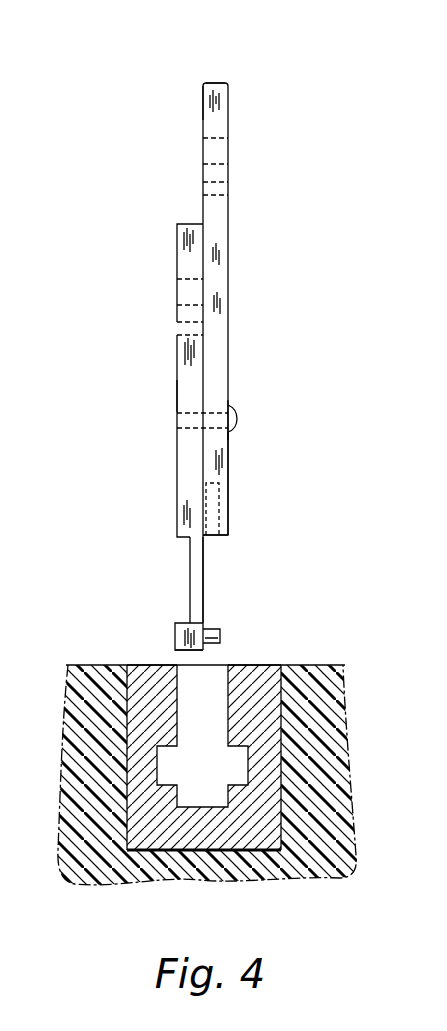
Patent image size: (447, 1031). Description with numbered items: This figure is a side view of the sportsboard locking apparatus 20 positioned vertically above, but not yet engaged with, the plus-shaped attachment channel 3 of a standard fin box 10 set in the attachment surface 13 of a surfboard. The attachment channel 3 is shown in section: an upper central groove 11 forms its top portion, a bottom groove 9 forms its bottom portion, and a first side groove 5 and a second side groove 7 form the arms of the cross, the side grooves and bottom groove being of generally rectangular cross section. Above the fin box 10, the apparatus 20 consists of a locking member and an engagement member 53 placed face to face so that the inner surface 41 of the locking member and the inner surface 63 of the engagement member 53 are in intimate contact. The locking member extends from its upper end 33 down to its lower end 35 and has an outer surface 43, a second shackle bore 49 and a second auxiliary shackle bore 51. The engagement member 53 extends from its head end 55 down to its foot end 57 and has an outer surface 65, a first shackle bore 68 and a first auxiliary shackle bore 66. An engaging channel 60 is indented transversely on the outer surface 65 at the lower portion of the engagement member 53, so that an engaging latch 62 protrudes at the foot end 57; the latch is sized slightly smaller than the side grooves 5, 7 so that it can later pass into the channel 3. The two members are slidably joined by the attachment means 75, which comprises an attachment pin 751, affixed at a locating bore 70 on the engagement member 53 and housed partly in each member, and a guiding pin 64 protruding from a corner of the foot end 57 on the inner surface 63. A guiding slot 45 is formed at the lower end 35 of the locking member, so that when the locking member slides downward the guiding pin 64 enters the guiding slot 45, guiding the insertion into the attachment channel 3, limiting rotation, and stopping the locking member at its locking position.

The sportsboard locking apparatus 20 is at (199, 62).
The upper end 33 is at (219, 84).
The inner surface 41 is at (202, 103).
The second shackle bore 49 is at (228, 141).
The second auxiliary shackle bore 51 is at (230, 183).
The head end 55 is at (180, 224).
The first shackle bore 68 is at (177, 290).
The first auxiliary shackle bore 66 is at (177, 327).
The outer surface 65 is at (177, 370).
The engagement member 53 is at (185, 400).
The locating bore 70 is at (177, 421).
The attachment pin 751 is at (238, 410).
The attachment means 75 is at (280, 425).
The outer surface 43 is at (232, 432).
The guiding slot 45 is at (212, 521).
The lower end 35 is at (225, 537).
The engaging channel 60 is at (188, 573).
The inner surface 63 is at (204, 598).
The engaging latch 62 is at (175, 631).
The guiding pin 64 is at (222, 637).
The foot end 57 is at (182, 652).
The attachment surface 13 is at (128, 665).
The fin box 10 is at (100, 852).
The upper central groove 11 is at (193, 705).
The first side groove 5 is at (162, 776).
The second side groove 7 is at (253, 781).
The bottom groove 9 is at (220, 810).
The attachment channel 3 is at (191, 778).